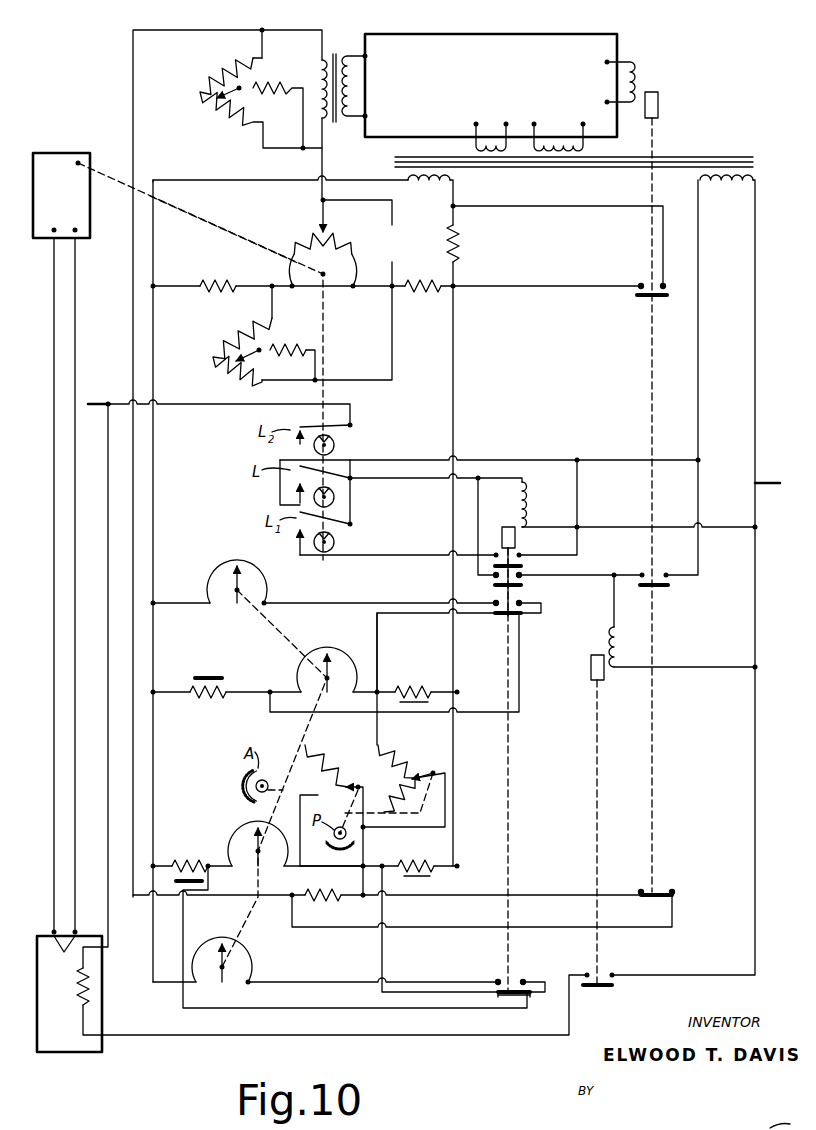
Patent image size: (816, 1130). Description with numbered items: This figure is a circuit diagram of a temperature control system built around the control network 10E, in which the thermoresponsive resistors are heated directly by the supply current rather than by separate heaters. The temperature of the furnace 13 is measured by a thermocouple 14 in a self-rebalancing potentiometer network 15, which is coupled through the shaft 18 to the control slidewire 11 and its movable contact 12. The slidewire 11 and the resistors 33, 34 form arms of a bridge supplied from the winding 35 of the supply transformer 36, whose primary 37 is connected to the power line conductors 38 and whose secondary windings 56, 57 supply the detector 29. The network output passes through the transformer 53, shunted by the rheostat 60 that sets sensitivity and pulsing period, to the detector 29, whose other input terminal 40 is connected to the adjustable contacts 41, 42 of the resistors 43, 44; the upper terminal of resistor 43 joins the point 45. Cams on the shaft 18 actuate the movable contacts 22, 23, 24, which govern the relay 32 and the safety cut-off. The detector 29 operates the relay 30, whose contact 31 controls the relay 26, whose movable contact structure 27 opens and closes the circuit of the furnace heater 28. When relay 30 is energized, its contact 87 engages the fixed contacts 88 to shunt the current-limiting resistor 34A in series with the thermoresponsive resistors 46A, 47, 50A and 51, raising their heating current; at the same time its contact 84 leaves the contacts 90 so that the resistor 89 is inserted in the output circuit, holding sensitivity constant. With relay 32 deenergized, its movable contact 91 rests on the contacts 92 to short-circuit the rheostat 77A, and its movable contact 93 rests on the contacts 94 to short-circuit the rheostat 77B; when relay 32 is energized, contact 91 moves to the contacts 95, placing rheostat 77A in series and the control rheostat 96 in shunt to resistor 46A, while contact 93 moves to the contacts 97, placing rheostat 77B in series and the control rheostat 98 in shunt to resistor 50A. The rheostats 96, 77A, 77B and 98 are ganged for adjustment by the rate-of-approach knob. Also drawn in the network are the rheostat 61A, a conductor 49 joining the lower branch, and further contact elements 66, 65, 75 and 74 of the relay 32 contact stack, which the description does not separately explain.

The input terminal 40 is at (262, 30).
The transformer 53 is at (347, 25).
The rheostat 60 is at (200, 80).
The detector 29 is at (500, 60).
The relay 30 is at (640, 77).
The secondary winding 56 is at (490, 138).
The secondary winding 57 is at (556, 138).
The self-rebalancing potentiometer network 15 is at (66, 206).
The shaft 18 is at (214, 224).
The movable contact 12 is at (328, 220).
The control slidewire 11 is at (348, 244).
The resistor 33 is at (206, 283).
The current-limiting resistor 34A is at (458, 244).
The resistor 34 is at (418, 292).
The secondary winding 35 is at (450, 184).
The supply transformer 36 is at (575, 191).
The primary winding 37 is at (708, 182).
The fixed contacts 88 is at (640, 283).
The movable contact 87 is at (654, 298).
The rheostat 61A is at (222, 356).
The power line conductors 38 is at (95, 404).
The movable contact 22 is at (346, 436).
The movable contact 23 is at (350, 470).
The movable contact 24 is at (348, 516).
The control network 10E is at (209, 505).
The relay 32 is at (530, 504).
The contacts 66 is at (496, 555).
The contact bar 65 is at (522, 568).
The contacts 75 is at (496, 577).
The contact bar 74 is at (522, 588).
The fixed contacts 95 is at (495, 602).
The fixed contacts 92 is at (498, 616).
The movable contact 91 is at (508, 620).
The contact 31 is at (658, 588).
The relay 26 is at (624, 641).
The control rheostat 96 is at (266, 586).
The rheostat 77A is at (327, 650).
The point 45 is at (377, 690).
The thermoresponsive resistor 47 is at (404, 684).
The thermosensitive resistor 46A is at (208, 700).
The resistor 44 is at (325, 758).
The resistor 43 is at (396, 756).
The adjustable contact 41 is at (422, 770).
The adjustable contact 42 is at (354, 790).
The thermosensitive resistor 50A is at (188, 860).
The rheostat 77B is at (254, 822).
The conductor 49 is at (306, 870).
The thermoresponsive resistor 51 is at (410, 860).
The resistor 89 is at (330, 902).
The control rheostat 98 is at (250, 956).
The fixed contacts 97 is at (498, 980).
The fixed contacts 94 is at (500, 998).
The movable contact 93 is at (508, 996).
The contact 84 is at (664, 890).
The fixed contacts 90 is at (656, 897).
The movable contact structure 27 is at (605, 988).
The thermocouple 14 is at (66, 946).
The furnace heater 28 is at (76, 998).
The furnace 13 is at (56, 1052).